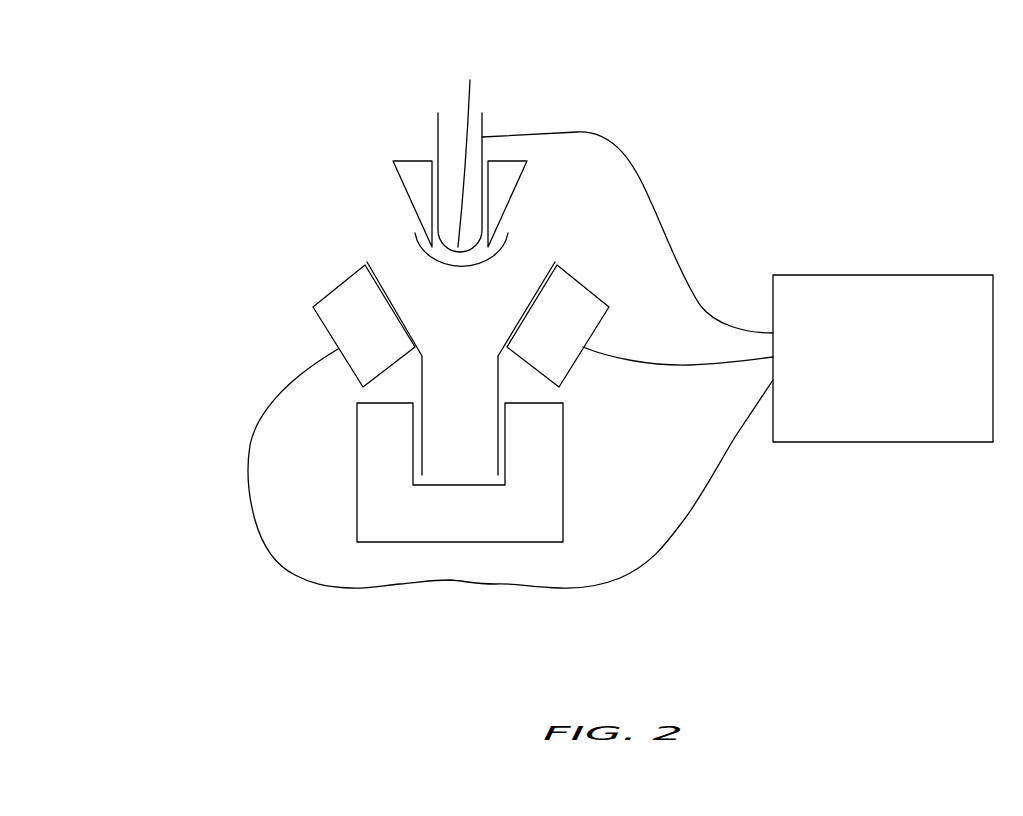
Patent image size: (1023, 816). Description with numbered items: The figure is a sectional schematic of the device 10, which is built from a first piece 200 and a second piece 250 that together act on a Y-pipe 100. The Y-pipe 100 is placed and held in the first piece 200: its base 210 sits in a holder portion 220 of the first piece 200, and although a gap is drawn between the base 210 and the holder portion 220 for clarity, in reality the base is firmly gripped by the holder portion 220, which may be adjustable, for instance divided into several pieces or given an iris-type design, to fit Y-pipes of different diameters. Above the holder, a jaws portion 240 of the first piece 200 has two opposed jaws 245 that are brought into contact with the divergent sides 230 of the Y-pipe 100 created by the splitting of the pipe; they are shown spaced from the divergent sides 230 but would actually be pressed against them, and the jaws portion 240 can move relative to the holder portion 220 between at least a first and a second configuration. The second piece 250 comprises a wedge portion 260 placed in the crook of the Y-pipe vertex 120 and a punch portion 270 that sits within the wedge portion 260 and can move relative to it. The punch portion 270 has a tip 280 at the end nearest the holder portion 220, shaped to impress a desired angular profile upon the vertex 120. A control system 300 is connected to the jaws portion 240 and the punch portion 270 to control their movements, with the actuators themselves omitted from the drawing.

The device 10 is at (880, 100).
The Y-pipe 100 is at (418, 240).
The Y-pipe vertex 120 is at (462, 272).
The first piece 200 is at (238, 395).
The base of the Y-pipe 210 is at (477, 467).
The holder portion 220 is at (565, 472).
The divergent sides 230 is at (531, 308).
The jaws portion 240 is at (306, 275).
The jaws 245 is at (325, 327).
The second piece 250 is at (355, 158).
The wedge portion 260 is at (507, 207).
The punch portion 270 is at (481, 148).
The tip 280 is at (471, 150).
The control system 300 is at (901, 372).